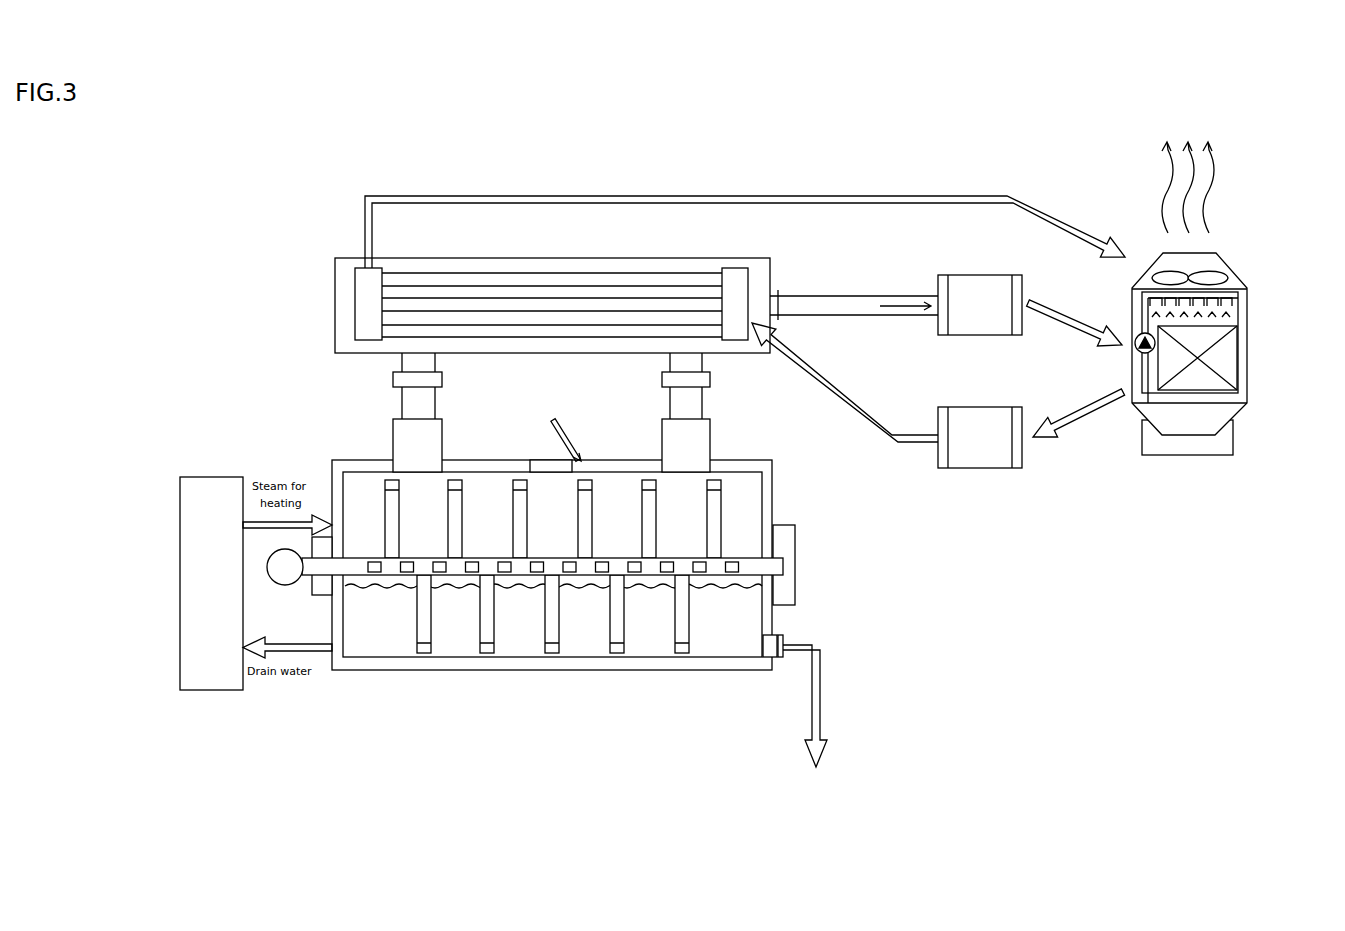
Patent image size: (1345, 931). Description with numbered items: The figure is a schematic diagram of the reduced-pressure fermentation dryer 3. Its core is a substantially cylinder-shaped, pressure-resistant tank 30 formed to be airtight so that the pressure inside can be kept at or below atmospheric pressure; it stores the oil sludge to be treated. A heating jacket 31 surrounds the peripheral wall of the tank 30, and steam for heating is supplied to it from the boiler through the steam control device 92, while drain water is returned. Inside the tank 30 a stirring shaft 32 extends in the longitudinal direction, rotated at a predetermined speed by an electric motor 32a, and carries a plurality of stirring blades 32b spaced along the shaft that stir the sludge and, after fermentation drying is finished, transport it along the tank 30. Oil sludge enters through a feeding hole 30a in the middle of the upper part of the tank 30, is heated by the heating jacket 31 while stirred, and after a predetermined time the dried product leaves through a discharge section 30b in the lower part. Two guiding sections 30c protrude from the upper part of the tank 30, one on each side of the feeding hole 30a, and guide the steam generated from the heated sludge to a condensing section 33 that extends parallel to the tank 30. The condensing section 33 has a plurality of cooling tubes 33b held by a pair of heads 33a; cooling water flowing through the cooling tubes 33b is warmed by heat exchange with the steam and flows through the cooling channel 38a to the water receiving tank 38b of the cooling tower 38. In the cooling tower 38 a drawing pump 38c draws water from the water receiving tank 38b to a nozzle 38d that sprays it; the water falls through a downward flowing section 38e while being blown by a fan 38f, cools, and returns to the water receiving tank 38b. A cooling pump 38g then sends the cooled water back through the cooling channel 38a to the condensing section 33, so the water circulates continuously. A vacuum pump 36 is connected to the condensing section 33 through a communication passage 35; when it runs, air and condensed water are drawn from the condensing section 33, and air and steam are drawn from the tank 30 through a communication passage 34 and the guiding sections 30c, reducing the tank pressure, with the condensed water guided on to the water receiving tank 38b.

The reduced-pressure fermentation dryer 3 is at (553, 582).
The tank 30 is at (410, 672).
The feeding hole 30a is at (548, 457).
The discharge section 30b is at (768, 657).
The guiding sections 30c is at (393, 440).
The heating jacket 31 is at (549, 660).
The stirring shaft 32 is at (353, 567).
The electric motor 32a is at (280, 585).
The stirring blades 32b is at (415, 562).
The condensing section 33 is at (533, 281).
The heads 33a is at (358, 268).
The cooling tubes 33b is at (508, 278).
The communication passage 34 is at (400, 362).
The communication passage 35 is at (925, 300).
The vacuum pump 36 is at (998, 280).
The cooling tower 38 is at (1202, 335).
The cooling channel 38a is at (1037, 172).
The water receiving tank 38b is at (1183, 427).
The drawing pump 38c is at (1138, 350).
The nozzle 38d is at (1230, 302).
The downward flowing section 38e is at (1230, 358).
The fan 38f is at (1218, 275).
The cooling pump 38g is at (985, 460).
The steam control device 92 is at (210, 477).